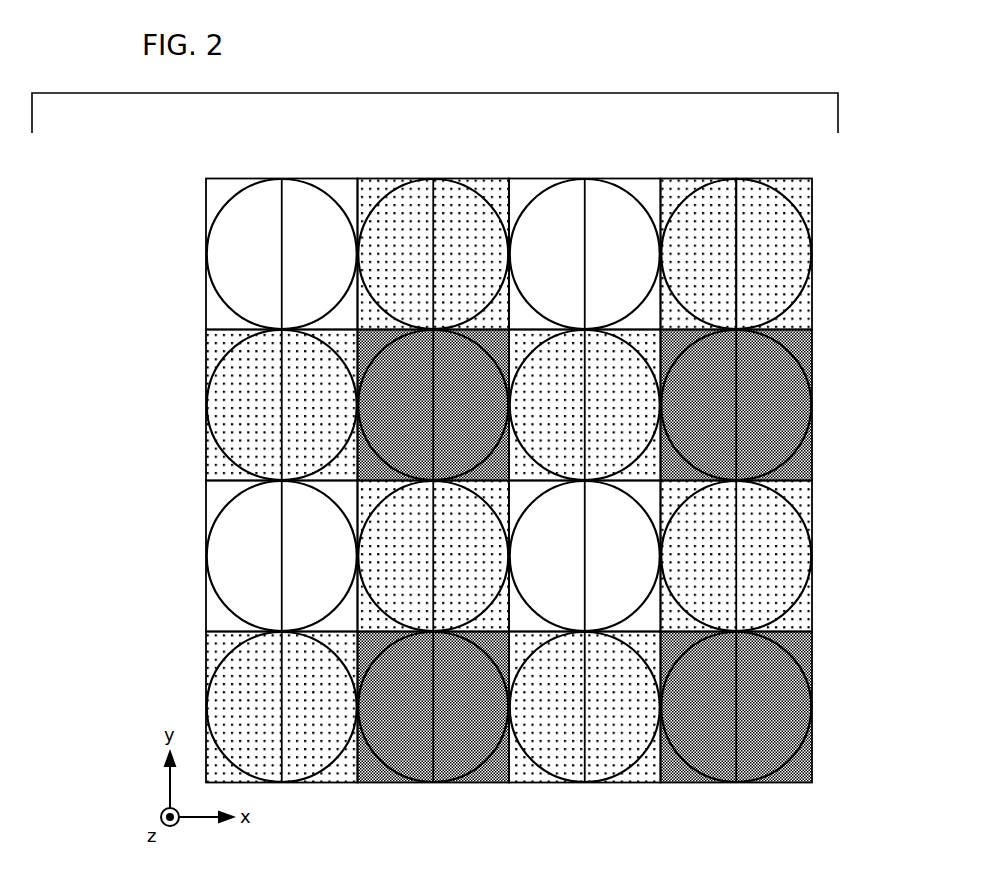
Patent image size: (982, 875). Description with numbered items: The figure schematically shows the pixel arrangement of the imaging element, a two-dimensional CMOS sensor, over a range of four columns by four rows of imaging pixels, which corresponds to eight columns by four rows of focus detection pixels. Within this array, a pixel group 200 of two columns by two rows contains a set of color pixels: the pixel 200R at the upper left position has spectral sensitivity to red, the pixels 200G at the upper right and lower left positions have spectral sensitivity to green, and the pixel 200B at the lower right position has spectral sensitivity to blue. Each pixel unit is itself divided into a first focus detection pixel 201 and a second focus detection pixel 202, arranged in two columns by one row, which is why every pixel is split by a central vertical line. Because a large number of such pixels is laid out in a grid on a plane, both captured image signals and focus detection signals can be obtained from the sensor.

The pixel group 200 is at (112, 285).
The pixel 200R is at (242, 286).
The pixel 200G is at (232, 362).
The pixel 200B is at (385, 412).
The first focus detection pixel 201 is at (711, 203).
The second focus detection pixel 202 is at (748, 203).